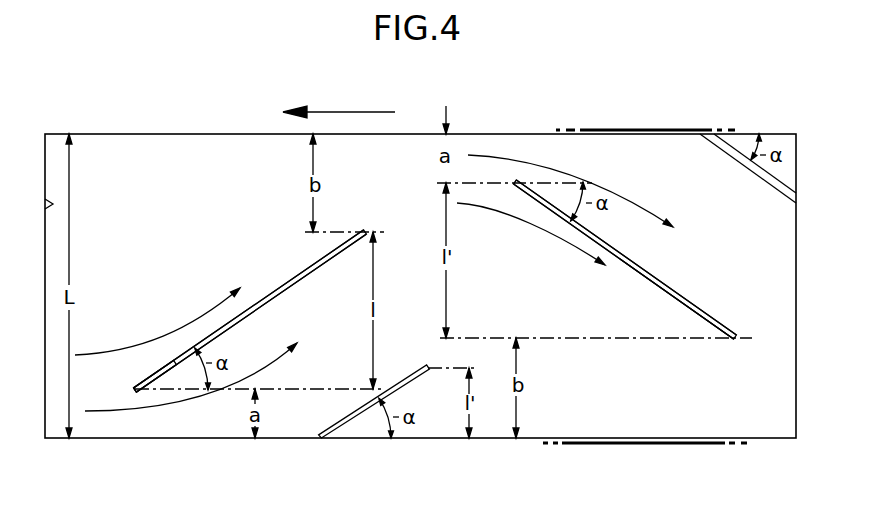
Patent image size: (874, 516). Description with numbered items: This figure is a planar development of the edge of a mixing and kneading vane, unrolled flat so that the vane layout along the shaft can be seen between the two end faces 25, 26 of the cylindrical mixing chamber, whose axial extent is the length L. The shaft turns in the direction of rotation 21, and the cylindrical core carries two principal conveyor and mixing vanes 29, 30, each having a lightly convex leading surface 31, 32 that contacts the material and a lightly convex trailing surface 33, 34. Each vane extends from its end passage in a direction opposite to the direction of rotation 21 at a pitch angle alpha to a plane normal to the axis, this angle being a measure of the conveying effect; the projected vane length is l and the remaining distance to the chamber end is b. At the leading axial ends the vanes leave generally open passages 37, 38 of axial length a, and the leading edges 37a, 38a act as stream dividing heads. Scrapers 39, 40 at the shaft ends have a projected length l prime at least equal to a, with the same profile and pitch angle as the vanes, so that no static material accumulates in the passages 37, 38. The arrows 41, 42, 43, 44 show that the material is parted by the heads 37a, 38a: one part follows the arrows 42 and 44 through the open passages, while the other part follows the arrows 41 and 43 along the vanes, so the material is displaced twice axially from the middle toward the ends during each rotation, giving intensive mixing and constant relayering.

The direction of rotation 21 is at (341, 110).
The end face 25 is at (645, 128).
The end face 26 is at (641, 446).
The principal conveyor and mixing vane 29 is at (304, 265).
The principal conveyor and mixing vane 30 is at (663, 278).
The leading surface 31 is at (278, 286).
The leading surface 32 is at (667, 293).
The trailing surface 33 is at (298, 283).
The trailing surface 34 is at (698, 311).
The passage 37 is at (135, 420).
The leading edge 37a is at (134, 391).
The passage 38 is at (517, 153).
The leading edge 38a is at (517, 181).
The scraper 39 is at (359, 415).
The scraper 40 is at (751, 171).
The arrow 41 is at (148, 345).
The arrow 42 is at (193, 403).
The arrow 43 is at (541, 227).
The arrow 44 is at (630, 196).